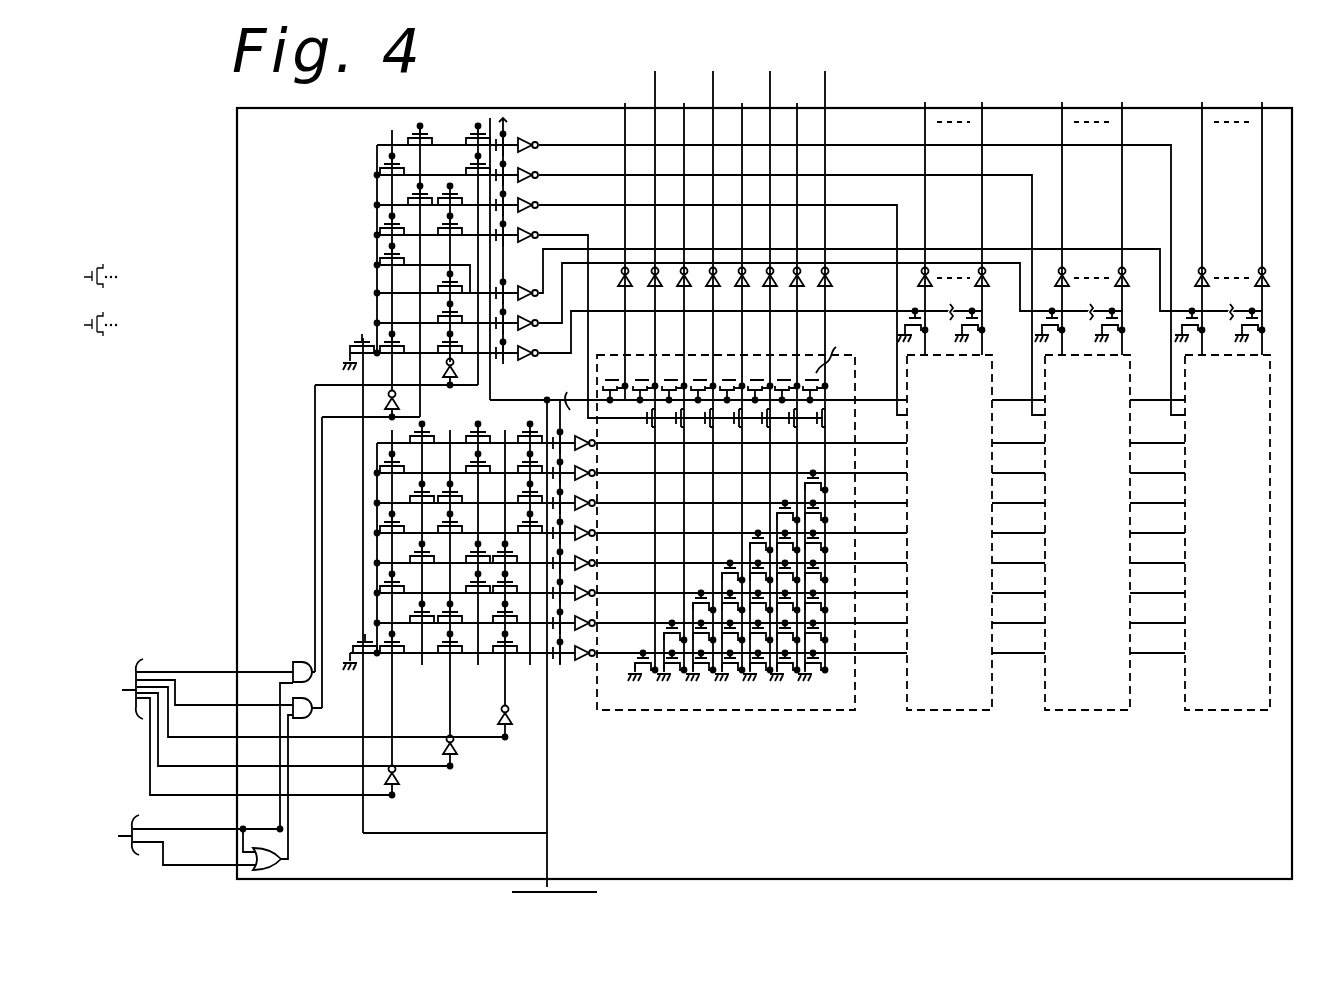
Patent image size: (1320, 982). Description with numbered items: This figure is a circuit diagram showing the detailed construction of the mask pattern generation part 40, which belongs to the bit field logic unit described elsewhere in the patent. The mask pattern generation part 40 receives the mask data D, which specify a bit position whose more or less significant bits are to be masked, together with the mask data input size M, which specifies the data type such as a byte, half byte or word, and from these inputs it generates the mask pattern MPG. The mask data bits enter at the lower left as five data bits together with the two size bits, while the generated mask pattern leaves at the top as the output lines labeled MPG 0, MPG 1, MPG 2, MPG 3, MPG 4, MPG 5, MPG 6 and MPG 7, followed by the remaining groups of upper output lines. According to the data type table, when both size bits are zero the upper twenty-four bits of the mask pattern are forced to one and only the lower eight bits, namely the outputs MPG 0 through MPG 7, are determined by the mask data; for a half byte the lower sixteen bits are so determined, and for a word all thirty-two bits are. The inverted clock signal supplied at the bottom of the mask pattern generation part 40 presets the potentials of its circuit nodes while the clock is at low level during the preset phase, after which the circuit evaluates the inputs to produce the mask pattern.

The mask pattern generation part 40 is at (530, 108).
The mask pattern signal MPG0 0 is at (624, 240).
The mask pattern signal MPG1 1 is at (654, 359).
The mask pattern signal MPG2 2 is at (683, 373).
The mask pattern signal MPG3 3 is at (712, 359).
The mask pattern signal MPG4 4 is at (740, 373).
The mask pattern signal MPG5 5 is at (769, 359).
The mask pattern signal MPG6 6 is at (796, 373).
The mask pattern signal MPG7 7 is at (824, 359).